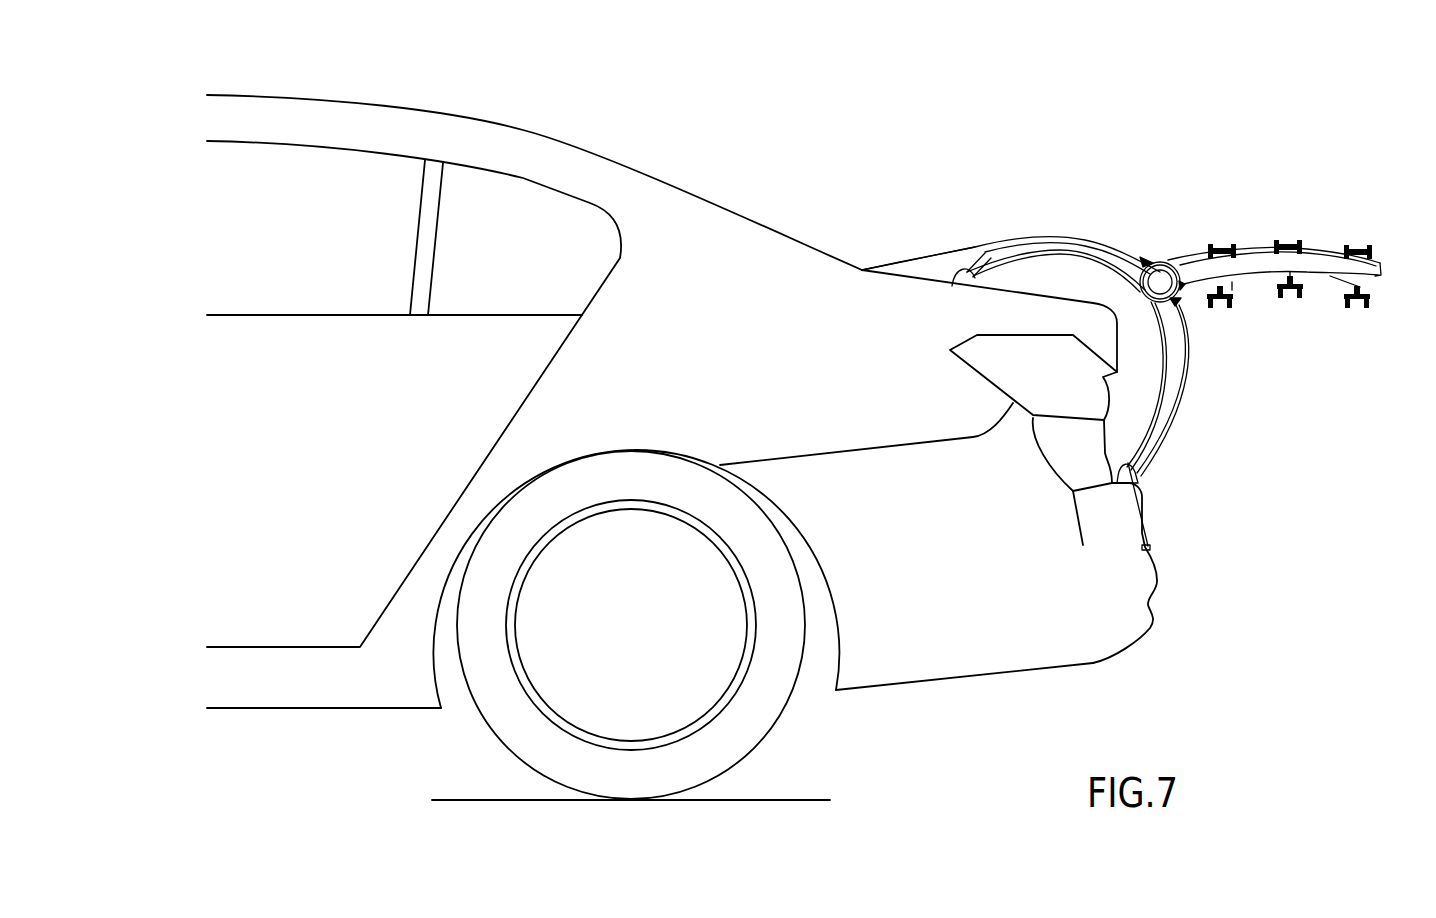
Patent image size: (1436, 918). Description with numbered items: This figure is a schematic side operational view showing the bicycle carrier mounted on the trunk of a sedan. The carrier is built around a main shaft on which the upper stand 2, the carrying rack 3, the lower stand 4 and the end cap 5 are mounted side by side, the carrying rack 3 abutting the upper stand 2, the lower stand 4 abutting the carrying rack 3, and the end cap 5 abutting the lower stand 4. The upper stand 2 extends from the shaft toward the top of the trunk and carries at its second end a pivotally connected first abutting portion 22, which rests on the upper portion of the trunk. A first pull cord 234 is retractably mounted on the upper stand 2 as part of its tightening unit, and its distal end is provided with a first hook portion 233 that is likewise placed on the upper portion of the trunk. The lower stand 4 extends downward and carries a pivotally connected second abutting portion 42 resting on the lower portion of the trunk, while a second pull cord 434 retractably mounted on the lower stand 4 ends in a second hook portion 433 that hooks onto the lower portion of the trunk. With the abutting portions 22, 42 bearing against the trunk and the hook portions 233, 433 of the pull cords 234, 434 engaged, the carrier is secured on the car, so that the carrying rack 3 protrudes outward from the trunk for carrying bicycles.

The upper stand 2 is at (1070, 238).
The carrying rack 3 is at (1322, 247).
The lower stand 4 is at (1188, 357).
The end cap 5 is at (1170, 260).
The first abutting portion 22 is at (963, 283).
The second abutting portion 42 is at (1121, 472).
The first hook portion 233 is at (865, 268).
The first pull cord 234 is at (947, 252).
The second hook portion 433 is at (1151, 548).
The second pull cord 434 is at (1160, 473).